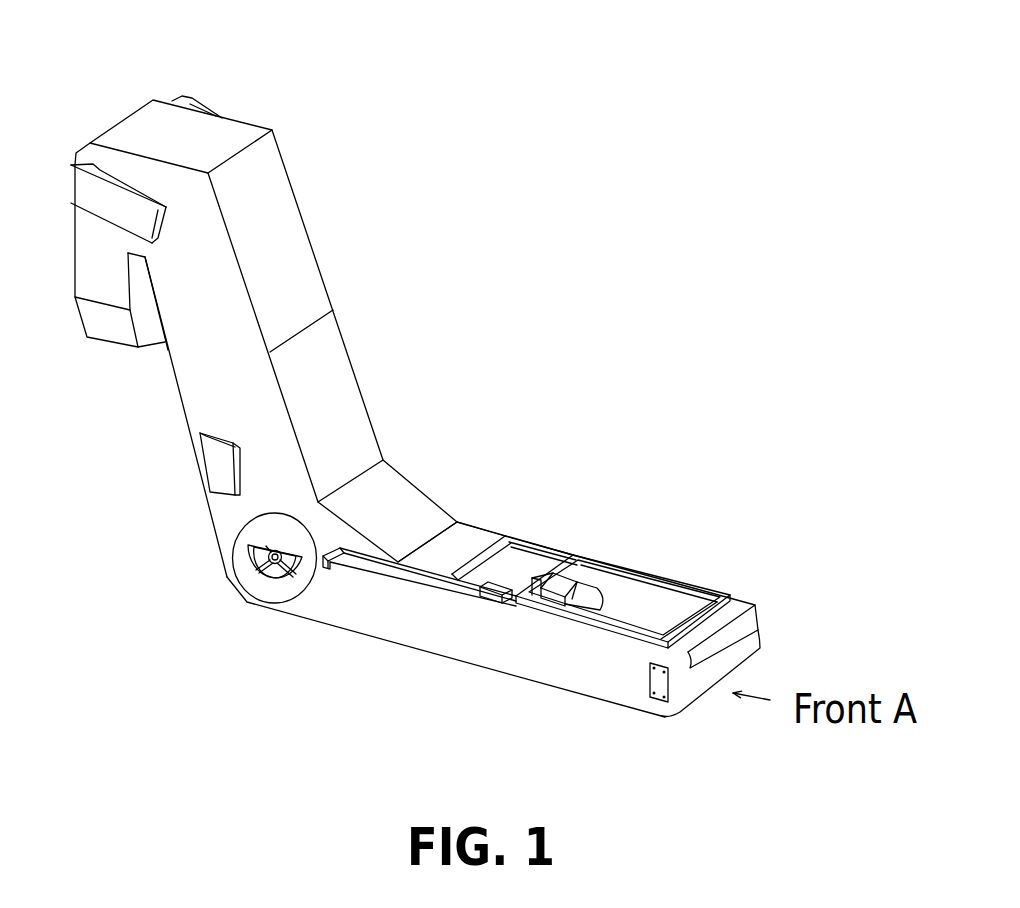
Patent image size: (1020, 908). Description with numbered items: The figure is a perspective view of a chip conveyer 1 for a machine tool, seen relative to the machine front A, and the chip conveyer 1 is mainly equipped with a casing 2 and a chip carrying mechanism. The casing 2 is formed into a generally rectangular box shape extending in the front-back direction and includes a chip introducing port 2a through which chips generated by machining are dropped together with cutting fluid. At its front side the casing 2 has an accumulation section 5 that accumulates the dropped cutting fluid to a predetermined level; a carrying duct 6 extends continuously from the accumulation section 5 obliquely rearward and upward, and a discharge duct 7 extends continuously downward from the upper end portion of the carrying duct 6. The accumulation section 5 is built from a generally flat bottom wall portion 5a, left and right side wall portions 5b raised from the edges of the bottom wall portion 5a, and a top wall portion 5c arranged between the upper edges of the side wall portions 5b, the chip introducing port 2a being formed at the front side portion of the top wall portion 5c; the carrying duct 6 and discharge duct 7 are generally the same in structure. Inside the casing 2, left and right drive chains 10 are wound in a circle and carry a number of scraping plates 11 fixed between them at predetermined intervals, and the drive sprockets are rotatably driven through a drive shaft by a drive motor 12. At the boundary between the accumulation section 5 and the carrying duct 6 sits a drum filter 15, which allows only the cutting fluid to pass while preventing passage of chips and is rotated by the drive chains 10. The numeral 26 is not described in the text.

The chip conveyer 1 is at (348, 118).
The casing 2 is at (400, 389).
The chip introducing port 2a is at (633, 590).
The accumulation section 5 is at (497, 533).
The bottom wall portion 5a is at (603, 680).
The side wall portion 5b is at (476, 658).
The top wall portion 5c is at (467, 532).
The carrying duct 6 is at (328, 290).
The discharge duct 7 is at (73, 284).
The drive chain 10 is at (578, 575).
The scraping plate 11 is at (557, 595).
The drive motor 12 is at (189, 93).
The drum filter 15 is at (231, 540).
The side projection 26 is at (82, 230).